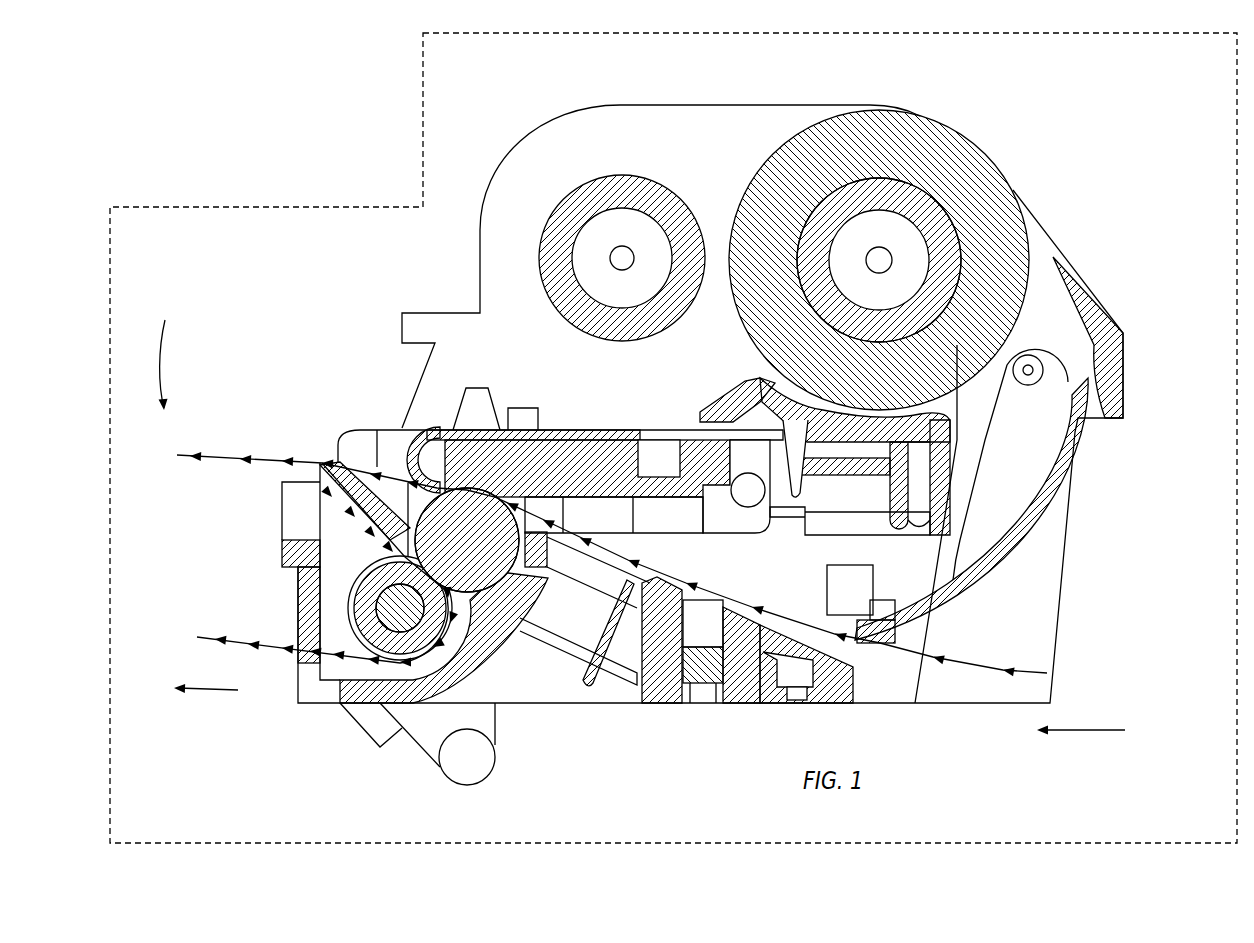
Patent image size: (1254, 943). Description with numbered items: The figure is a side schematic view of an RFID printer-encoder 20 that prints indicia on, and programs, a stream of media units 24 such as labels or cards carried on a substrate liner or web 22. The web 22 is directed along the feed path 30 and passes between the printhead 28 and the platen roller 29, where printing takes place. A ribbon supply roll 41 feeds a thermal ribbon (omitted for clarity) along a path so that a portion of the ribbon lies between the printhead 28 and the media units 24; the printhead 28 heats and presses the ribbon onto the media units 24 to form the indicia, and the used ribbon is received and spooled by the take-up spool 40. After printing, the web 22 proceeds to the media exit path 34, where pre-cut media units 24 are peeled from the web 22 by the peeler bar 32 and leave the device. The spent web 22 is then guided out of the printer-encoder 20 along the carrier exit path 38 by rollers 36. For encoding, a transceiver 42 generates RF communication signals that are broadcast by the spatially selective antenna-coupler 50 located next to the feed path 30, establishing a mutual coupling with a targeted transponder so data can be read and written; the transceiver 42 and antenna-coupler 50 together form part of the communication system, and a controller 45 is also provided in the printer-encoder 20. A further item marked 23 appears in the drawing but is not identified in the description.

The RFID printer-encoder 20 is at (253, 205).
The web 22 is at (1047, 673).
The duplex media path 23 is at (375, 505).
The media units 24 is at (236, 455).
The printhead 28 is at (477, 455).
The platen roller 29 is at (445, 545).
The feed path 30 is at (1094, 733).
The peeler bar 32 is at (385, 545).
The media exit path 34 is at (168, 351).
The rollers 36 is at (398, 620).
The carrier exit path 38 is at (206, 703).
The take-up spool 40 is at (657, 177).
The ribbon supply roll 41 is at (967, 153).
The transceiver 42 is at (584, 588).
The controller 45 is at (865, 578).
The antenna-coupler 50 is at (580, 565).